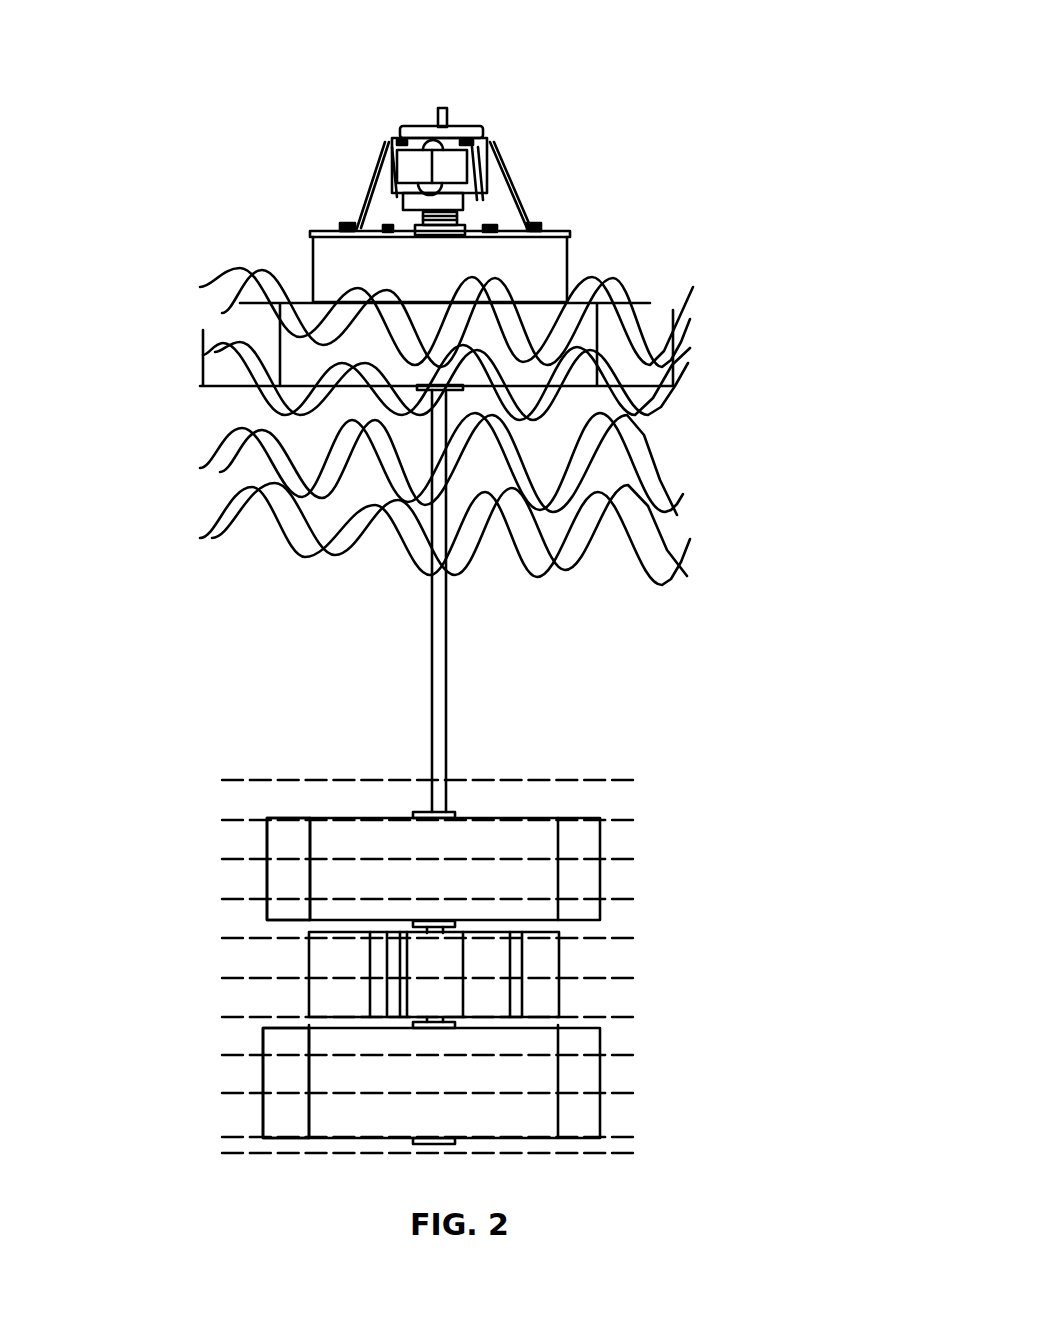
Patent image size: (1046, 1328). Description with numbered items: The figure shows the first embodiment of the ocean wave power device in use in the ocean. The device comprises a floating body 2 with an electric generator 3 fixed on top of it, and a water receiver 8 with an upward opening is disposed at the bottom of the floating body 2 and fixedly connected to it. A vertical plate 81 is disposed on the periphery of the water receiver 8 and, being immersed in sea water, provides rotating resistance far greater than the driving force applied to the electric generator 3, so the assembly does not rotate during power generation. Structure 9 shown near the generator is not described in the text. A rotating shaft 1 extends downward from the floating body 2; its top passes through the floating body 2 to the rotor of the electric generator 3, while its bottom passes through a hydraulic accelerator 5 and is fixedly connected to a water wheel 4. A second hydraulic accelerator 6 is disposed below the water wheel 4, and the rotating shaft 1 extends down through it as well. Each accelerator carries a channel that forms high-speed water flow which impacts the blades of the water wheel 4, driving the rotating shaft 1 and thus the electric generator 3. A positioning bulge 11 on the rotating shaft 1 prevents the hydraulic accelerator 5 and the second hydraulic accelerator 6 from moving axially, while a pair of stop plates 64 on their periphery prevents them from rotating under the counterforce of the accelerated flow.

The rotating shaft 1 is at (433, 670).
The floating body 2 is at (528, 258).
The electric generator 3 is at (405, 132).
The water wheel 4 is at (502, 963).
The hydraulic accelerator 5 is at (482, 850).
The second hydraulic accelerator 6 is at (543, 1078).
The water receiver 8 is at (525, 310).
The support legs 9 is at (507, 187).
The positioning bulge 11 is at (458, 808).
The stop plates 64 is at (280, 1077).
The vertical plate 81 is at (635, 332).